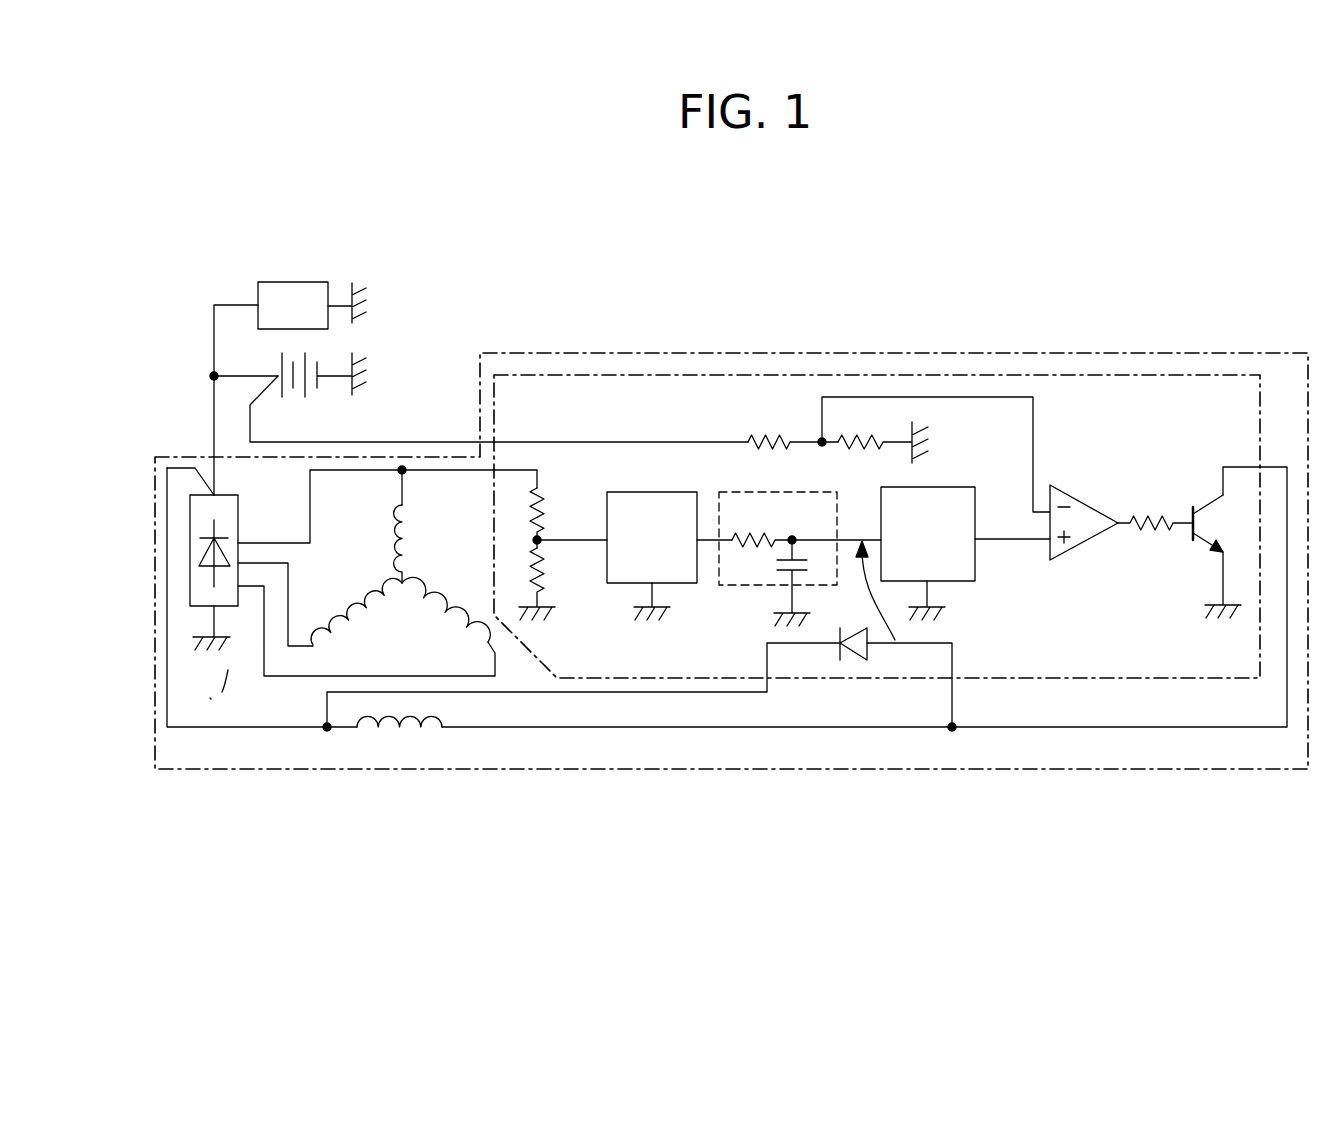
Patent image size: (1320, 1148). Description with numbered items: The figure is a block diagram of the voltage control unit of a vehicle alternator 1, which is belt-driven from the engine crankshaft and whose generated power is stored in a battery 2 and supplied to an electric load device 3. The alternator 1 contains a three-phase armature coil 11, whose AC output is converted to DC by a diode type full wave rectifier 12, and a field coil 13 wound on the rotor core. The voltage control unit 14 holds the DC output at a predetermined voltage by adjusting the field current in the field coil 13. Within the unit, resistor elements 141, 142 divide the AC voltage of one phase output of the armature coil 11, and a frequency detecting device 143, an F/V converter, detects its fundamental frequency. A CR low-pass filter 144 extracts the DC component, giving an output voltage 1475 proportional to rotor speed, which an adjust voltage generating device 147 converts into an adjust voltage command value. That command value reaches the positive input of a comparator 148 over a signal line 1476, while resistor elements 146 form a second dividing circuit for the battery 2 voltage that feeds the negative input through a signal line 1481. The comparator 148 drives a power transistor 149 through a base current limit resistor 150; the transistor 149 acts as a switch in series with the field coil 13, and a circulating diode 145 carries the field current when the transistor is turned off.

The vehicle alternator 1 is at (644, 352).
The battery 2 is at (320, 357).
The electric load device 3 is at (295, 295).
The armature coil 11 is at (413, 488).
The diode type full wave rectifier 12 is at (185, 468).
The field coil 13 is at (390, 732).
The voltage control unit 14 is at (732, 377).
The resistor element 141 is at (552, 503).
The resistor element 142 is at (577, 577).
The frequency detecting device 143 is at (680, 585).
The low-pass filter 144 is at (740, 587).
The circulating diode 145 is at (858, 660).
The resistor elements 146 is at (792, 440).
The adjust voltage generating device 147 is at (943, 487).
The output voltage 1475 is at (895, 640).
The signal line 1476 is at (1025, 541).
The comparator 148 is at (1093, 507).
The signal line 1481 is at (1010, 393).
The power transistor 149 is at (1223, 458).
The base current limit resistor 150 is at (1160, 513).